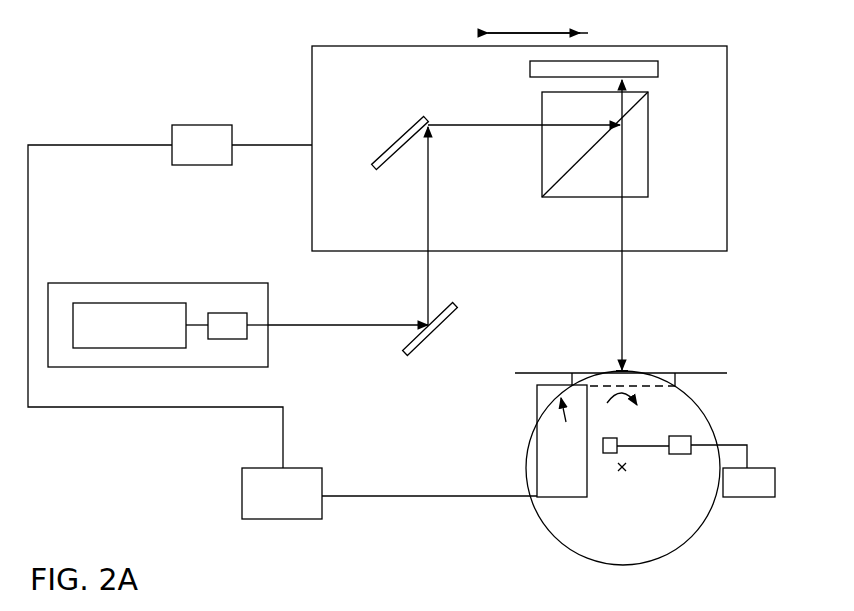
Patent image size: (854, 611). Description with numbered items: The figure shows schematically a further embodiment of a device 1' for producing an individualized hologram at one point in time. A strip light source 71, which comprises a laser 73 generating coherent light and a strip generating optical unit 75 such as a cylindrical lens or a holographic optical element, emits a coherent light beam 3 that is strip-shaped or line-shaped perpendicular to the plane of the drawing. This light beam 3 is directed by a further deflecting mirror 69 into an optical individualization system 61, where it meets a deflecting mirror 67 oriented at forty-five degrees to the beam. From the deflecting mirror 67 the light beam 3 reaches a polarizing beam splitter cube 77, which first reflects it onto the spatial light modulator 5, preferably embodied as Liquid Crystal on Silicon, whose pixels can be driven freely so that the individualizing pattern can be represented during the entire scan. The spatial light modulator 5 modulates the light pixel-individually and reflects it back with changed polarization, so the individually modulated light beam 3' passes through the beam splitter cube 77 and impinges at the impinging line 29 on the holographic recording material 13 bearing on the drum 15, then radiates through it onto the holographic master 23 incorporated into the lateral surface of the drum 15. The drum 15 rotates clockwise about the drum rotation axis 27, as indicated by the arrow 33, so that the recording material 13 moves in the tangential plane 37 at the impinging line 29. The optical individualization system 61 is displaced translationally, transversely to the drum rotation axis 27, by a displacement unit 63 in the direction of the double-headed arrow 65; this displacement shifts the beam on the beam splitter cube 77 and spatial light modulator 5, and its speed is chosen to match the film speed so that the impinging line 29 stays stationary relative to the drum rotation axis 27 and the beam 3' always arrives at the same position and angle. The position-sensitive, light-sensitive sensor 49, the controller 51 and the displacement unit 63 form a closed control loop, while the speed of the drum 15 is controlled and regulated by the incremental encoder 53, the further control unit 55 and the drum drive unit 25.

The device 1' is at (169, 487).
The coherent light beam 3 is at (444, 255).
The individually modulated light beam 3' is at (644, 225).
The spatial light modulator 5 is at (636, 61).
The holographic recording material 13 is at (548, 400).
The drum 15 is at (540, 438).
The holographic master 23 is at (556, 426).
The drum drive unit 25 is at (756, 472).
The drum rotation axis 27 is at (628, 469).
The impinging line 29 is at (626, 370).
The arrow 33 is at (626, 390).
The tangential plane 37 is at (727, 373).
The position-sensitive, light-sensitive sensor 49 is at (680, 387).
The controller 51 is at (270, 510).
The incremental encoder 53 is at (618, 442).
The further control unit 55 is at (693, 440).
The optical individualization system 61 is at (728, 97).
The displacement unit 63 is at (190, 133).
The double-headed arrow 65 is at (540, 33).
The deflecting mirror 67 is at (387, 153).
The further deflecting mirror 69 is at (441, 330).
The strip light source 71 is at (143, 358).
The laser 73 is at (123, 315).
The strip generating optical unit 75 is at (220, 317).
The polarizing beam splitter cube 77 is at (650, 168).